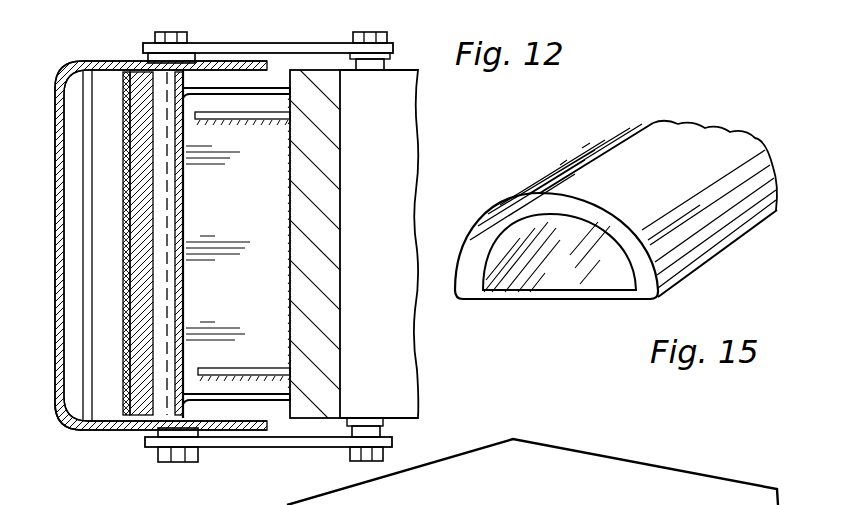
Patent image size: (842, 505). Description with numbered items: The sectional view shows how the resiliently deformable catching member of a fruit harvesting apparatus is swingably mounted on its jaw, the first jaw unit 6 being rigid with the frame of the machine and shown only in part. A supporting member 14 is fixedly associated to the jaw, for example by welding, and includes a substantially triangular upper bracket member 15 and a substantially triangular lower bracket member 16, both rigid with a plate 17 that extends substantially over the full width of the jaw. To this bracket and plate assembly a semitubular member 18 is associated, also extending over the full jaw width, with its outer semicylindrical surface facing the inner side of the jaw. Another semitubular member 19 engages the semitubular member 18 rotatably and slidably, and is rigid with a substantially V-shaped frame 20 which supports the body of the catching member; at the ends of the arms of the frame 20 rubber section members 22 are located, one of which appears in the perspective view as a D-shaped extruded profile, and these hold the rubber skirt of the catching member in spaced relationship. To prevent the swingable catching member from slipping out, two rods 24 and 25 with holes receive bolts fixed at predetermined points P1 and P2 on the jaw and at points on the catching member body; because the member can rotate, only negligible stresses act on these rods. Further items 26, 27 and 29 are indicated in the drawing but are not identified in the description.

In FIG. 12, the section member 22 is at (74, 87).
In FIG. 15, the section member 22 is at (560, 192).
In FIG. 12, the rod 24 is at (247, 43).
In FIG. 12, the rod 25 is at (262, 443).
In FIG. 12, the supporting member 14 is at (262, 292).
In FIG. 12, the upper bracket member 15 is at (292, 117).
In FIG. 12, the lower bracket member 16 is at (252, 366).
In FIG. 12, the plate 17 is at (272, 179).
In FIG. 12, the semitubular member 18 is at (183, 281).
In FIG. 12, the semitubular member 19 is at (137, 212).
In FIG. 12, the frame 20 is at (126, 152).
In FIG. 12, the tube end wall 26 is at (63, 425).
In FIG. 12, the bolt 27 is at (193, 476).
In FIG. 12, the nut 29 is at (154, 433).
In FIG. 12, the first jaw unit 6 is at (85, 494).
In FIG. 12, the fixing point P1 is at (367, 72).
In FIG. 12, the fixing point P2 is at (370, 417).